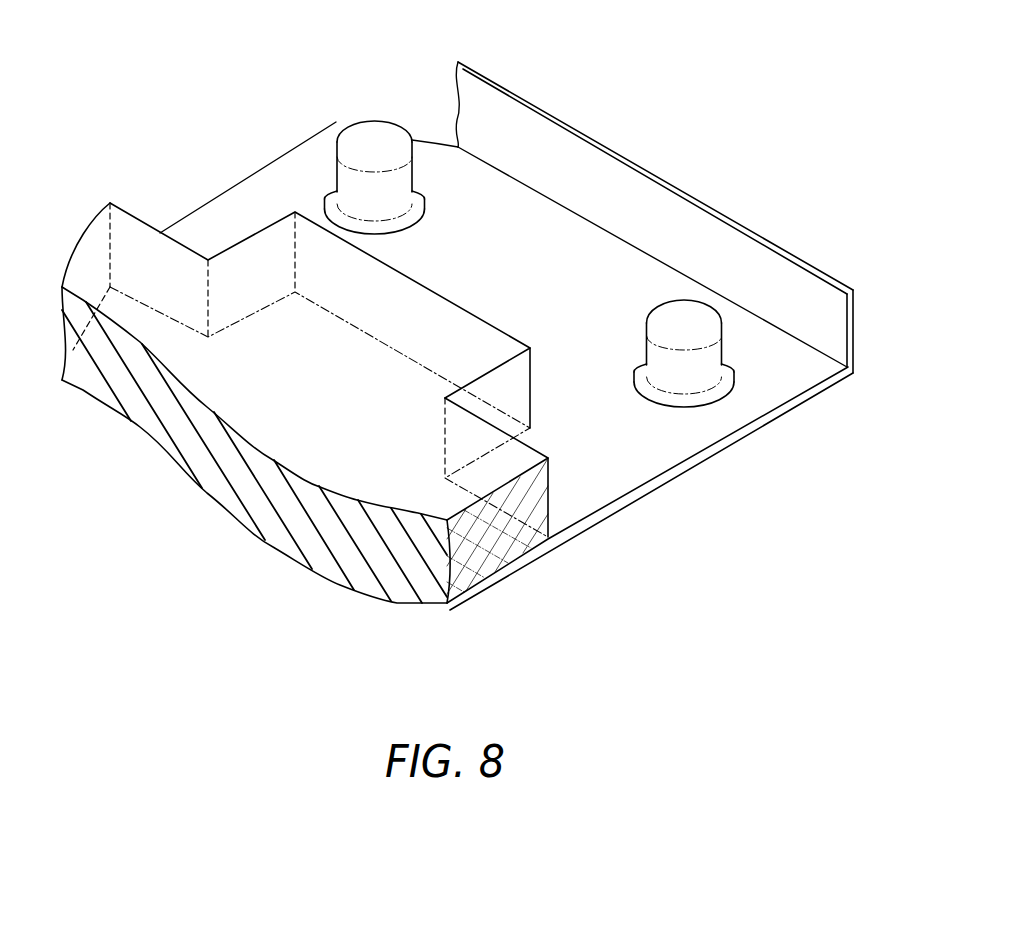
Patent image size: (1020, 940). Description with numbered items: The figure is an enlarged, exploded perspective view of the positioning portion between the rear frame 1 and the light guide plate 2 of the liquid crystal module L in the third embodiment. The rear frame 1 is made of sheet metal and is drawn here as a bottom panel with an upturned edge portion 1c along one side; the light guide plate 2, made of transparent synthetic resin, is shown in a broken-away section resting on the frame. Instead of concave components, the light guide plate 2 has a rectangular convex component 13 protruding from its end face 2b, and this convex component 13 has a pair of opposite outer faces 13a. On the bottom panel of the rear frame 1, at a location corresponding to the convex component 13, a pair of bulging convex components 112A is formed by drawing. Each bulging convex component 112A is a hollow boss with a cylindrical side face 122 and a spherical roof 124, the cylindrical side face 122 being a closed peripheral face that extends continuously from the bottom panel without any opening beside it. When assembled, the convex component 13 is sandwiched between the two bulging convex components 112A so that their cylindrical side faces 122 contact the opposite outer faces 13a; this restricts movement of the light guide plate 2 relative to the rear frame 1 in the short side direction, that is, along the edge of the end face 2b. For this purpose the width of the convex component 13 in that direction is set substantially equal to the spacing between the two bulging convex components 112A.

The liquid crystal module L is at (716, 116).
The rear frame 1 is at (660, 455).
The side wall of base plate 1c is at (793, 253).
The convex component 13 is at (415, 297).
The outer face 13a is at (241, 214).
The light guide plate 2 is at (486, 472).
The end face 2b is at (548, 428).
The bulging convex component 112A is at (375, 120).
The spherical roof 124 is at (363, 142).
The cylindrical side face 122 is at (408, 183).